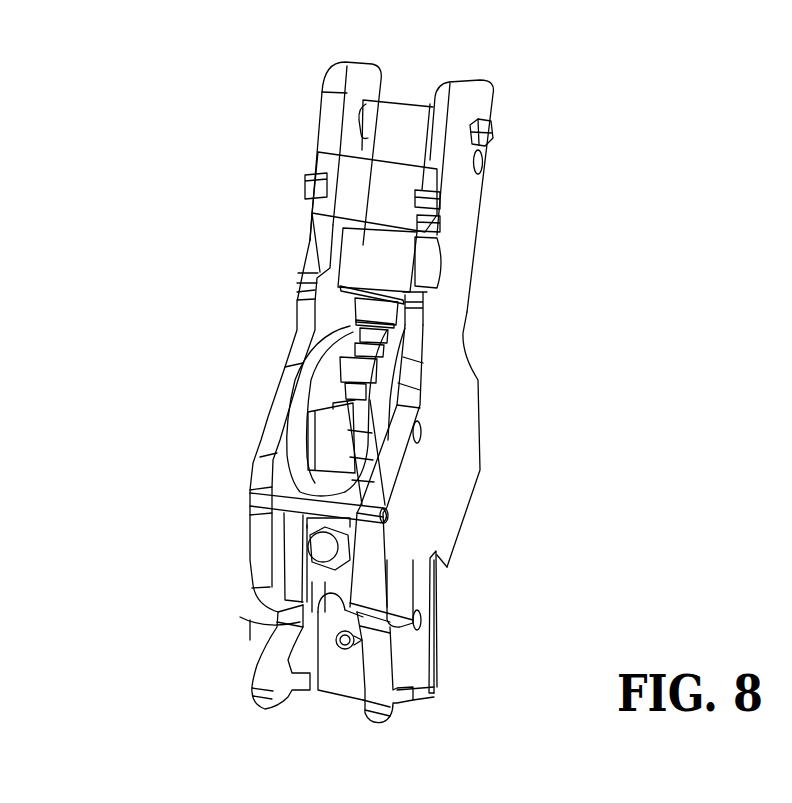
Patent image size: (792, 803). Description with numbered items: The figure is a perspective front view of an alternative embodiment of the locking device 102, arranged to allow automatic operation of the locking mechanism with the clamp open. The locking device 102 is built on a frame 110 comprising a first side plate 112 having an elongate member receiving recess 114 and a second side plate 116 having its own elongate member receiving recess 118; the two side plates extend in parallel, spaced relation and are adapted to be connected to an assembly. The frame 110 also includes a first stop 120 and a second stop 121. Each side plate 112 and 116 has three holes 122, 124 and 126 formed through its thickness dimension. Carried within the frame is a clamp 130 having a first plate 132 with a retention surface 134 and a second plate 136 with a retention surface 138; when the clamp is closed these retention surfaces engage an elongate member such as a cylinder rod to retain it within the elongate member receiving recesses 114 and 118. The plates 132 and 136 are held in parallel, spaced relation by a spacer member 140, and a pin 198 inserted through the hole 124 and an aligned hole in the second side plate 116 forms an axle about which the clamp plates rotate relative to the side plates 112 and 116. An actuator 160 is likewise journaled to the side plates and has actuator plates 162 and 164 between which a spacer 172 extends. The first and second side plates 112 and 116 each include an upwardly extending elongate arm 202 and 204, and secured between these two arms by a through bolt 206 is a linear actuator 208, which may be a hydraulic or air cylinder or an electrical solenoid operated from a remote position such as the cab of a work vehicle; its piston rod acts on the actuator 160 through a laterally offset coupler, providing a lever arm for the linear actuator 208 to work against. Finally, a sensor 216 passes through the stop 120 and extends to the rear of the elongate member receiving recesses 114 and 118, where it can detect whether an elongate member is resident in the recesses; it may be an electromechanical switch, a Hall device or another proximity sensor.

The locking device 102 is at (161, 676).
The frame 110 is at (422, 725).
The first side plate 112 is at (453, 415).
The elongate member receiving recess 114 is at (410, 689).
The second side plate 116 is at (287, 393).
The elongate member receiving recess 118 is at (277, 632).
The first stop 120 is at (342, 662).
The second stop 121 is at (280, 498).
The hole 122 is at (362, 110).
The hole 124 is at (400, 637).
The hole 126 is at (421, 436).
The clamp 130 is at (276, 518).
The first plate 132 is at (350, 578).
The retention surface 134 is at (435, 620).
The second plate 136 is at (288, 547).
The retention surface 138 is at (273, 619).
The spacer member 140 is at (338, 572).
The actuator 160 is at (312, 352).
The actuator plate 162 is at (390, 353).
The actuator plate 164 is at (330, 340).
The spacer 172 is at (327, 450).
The pin 198 is at (338, 610).
The elongate arm 202 is at (455, 272).
The elongate arm 204 is at (328, 104).
The through bolt 206 is at (488, 132).
The linear actuator 208 is at (414, 139).
The sensor 216 is at (347, 642).